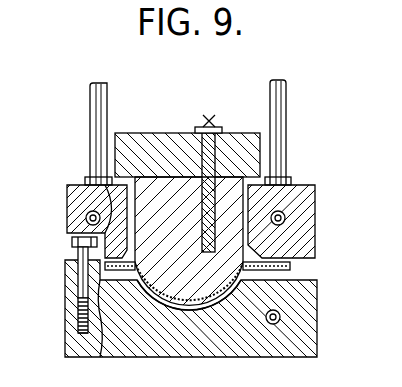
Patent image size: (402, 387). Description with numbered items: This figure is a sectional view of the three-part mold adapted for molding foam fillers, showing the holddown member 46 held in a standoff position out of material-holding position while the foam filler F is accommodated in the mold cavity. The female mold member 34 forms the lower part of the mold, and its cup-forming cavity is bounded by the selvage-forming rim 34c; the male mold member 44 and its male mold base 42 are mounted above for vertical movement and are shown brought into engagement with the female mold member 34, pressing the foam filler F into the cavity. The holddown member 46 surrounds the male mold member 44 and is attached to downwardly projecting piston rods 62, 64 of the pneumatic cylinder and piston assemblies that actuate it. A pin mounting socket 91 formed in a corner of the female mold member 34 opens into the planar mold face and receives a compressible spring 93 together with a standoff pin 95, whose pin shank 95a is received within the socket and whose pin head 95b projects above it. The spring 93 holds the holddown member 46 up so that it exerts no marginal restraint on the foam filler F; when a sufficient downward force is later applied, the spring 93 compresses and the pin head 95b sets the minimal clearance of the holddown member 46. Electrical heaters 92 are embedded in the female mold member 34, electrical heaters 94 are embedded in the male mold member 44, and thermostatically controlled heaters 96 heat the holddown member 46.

The female mold member 34 is at (317, 356).
The selvage-forming rim 34c is at (242, 298).
The male mold base 42 is at (173, 138).
The male mold member 44 is at (187, 234).
The holddown member 46 is at (308, 196).
The piston rod 62 is at (90, 89).
The piston rod 64 is at (287, 90).
The pin mounting socket 91 is at (80, 326).
The electrical heater 92 is at (282, 318).
The compressible spring 93 is at (78, 314).
The electrical heater 94 is at (223, 137).
The standoff pin 95 is at (52, 286).
The pin shank 95a is at (80, 273).
The pin head 95b is at (72, 241).
The heater 96 is at (287, 219).
The foam filler F is at (290, 266).